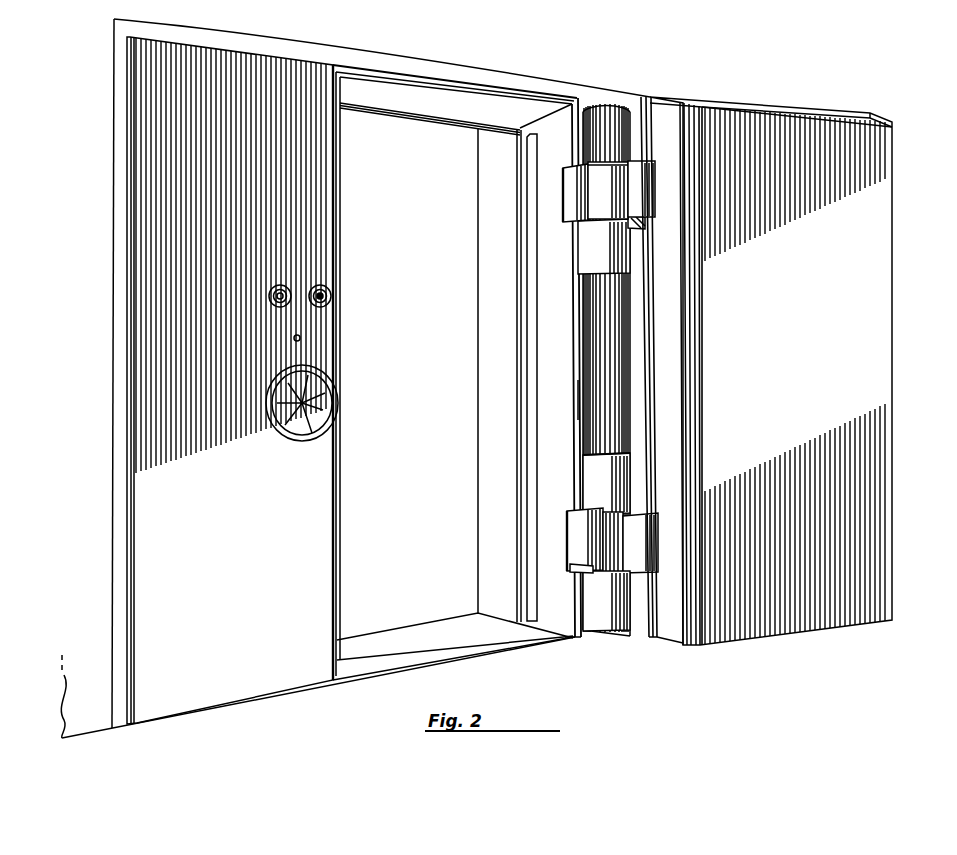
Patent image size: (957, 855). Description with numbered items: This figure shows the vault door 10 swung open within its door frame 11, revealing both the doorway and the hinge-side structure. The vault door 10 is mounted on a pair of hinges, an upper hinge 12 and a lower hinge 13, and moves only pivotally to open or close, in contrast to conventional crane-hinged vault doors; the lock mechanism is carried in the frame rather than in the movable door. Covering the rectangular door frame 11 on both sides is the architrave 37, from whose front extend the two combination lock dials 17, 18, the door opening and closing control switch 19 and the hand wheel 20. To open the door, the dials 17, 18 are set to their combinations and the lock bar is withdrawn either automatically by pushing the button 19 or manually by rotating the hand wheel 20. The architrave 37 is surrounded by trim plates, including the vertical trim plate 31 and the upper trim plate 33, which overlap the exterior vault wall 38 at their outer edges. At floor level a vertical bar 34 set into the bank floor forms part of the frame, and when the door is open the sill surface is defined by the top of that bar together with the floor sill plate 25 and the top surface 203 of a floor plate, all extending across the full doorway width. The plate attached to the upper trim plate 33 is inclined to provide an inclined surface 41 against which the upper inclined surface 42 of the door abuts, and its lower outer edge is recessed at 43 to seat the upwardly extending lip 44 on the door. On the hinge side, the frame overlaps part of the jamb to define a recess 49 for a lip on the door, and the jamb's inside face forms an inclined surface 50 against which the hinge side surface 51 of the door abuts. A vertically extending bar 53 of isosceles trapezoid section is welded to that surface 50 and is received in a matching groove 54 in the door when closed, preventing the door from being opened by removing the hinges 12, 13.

The vault door 10 is at (878, 282).
The door frame 11 is at (562, 620).
The upper door hinge 12 is at (630, 262).
The lower door hinge 13 is at (637, 511).
The combination lock dial 17 is at (284, 285).
The combination lock dial 18 is at (331, 295).
The door opening and closing control switch 19 is at (301, 339).
The hand wheel 20 is at (318, 401).
The floor sill plate 25 is at (403, 660).
The architrave trim plate 31 is at (116, 322).
The upper architrave trim plate 33 is at (417, 68).
The vertical bar 34 is at (512, 646).
The architrave 37 is at (705, 322).
The exterior vault wall 38 is at (90, 718).
The inclined surface 41 is at (430, 116).
The upper inclined surface of the door 42 is at (752, 110).
The recess 43 is at (523, 93).
The upwardly extending lip 44 is at (689, 106).
The recess 49 is at (578, 403).
The inclined surface 50 is at (586, 370).
The hinge side surface of the door 51 is at (670, 339).
The vertically extending bar 53 is at (532, 318).
The groove 54 is at (690, 397).
The top surface of floor plate 203 is at (397, 638).